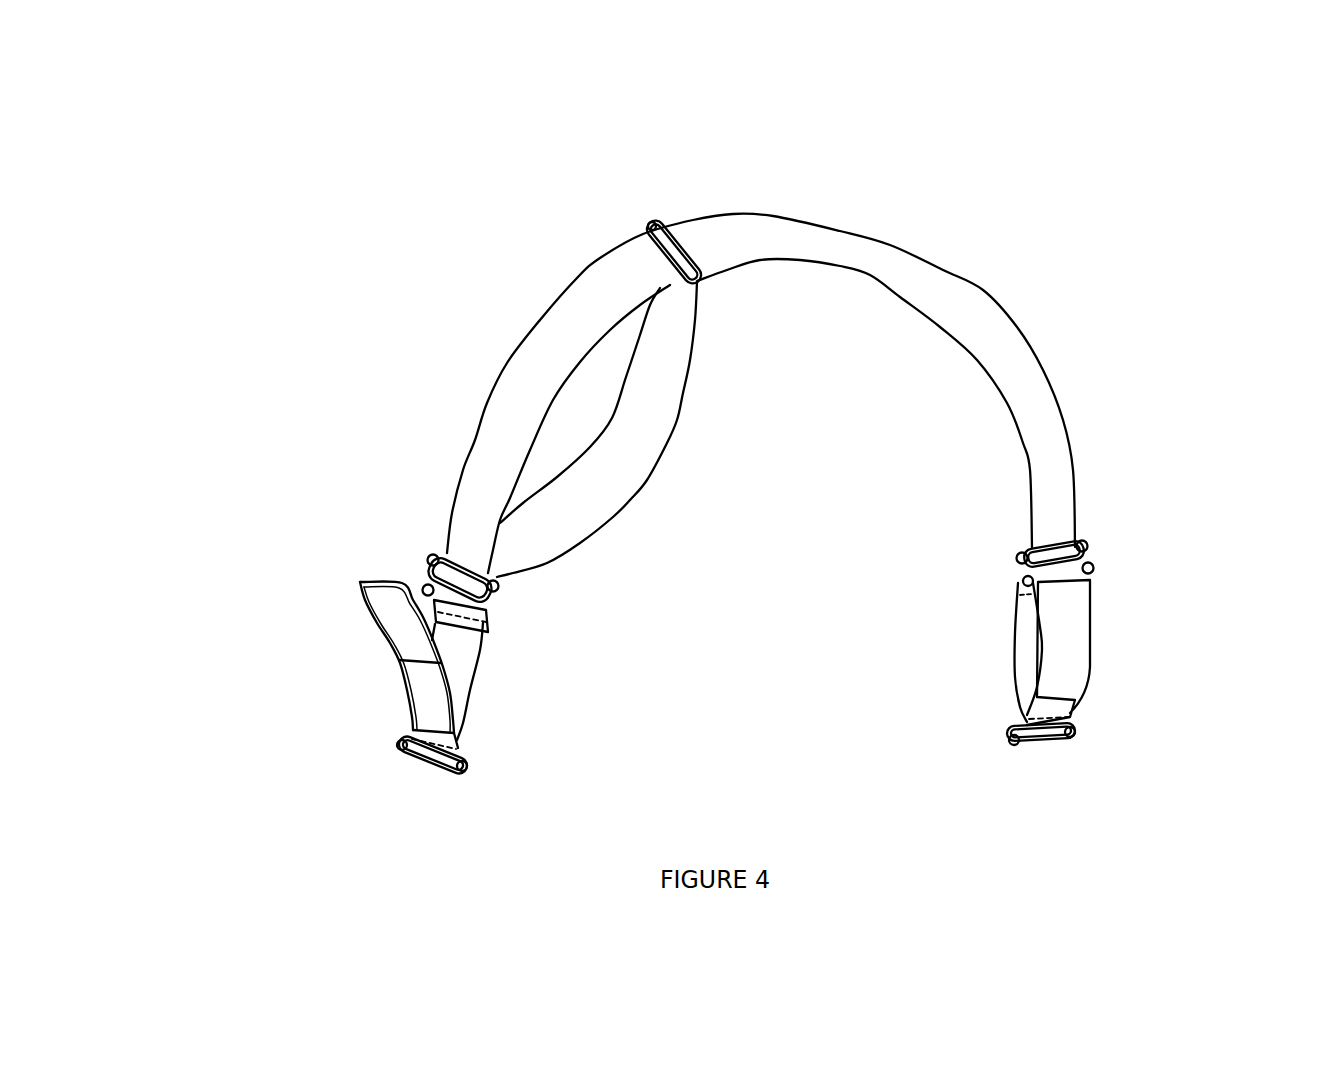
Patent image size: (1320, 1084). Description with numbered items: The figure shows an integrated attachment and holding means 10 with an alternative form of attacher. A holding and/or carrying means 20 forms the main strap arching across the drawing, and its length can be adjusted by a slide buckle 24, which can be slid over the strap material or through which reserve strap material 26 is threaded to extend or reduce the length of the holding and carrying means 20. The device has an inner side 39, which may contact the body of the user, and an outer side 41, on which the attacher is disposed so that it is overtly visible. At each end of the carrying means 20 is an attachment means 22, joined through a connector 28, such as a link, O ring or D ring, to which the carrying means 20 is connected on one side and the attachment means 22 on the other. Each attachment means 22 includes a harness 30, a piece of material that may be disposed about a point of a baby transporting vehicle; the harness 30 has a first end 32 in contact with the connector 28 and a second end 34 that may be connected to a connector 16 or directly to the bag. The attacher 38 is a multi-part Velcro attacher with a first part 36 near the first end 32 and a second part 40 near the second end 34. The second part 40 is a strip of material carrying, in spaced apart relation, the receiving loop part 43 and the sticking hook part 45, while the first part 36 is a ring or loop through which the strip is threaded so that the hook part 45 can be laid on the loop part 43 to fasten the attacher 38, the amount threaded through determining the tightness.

The integrated attachment and holding means 10 is at (1163, 240).
The connector 16 is at (453, 770).
The holding and/or carrying means 20 is at (837, 252).
The attachment means 22 is at (330, 659).
The slide buckle 24 is at (652, 232).
The reserve strap material 26 is at (667, 407).
The connector 28 is at (440, 553).
The harness 30 is at (467, 667).
The first end 32 is at (487, 620).
The second end 34 is at (463, 732).
The first part 36 is at (432, 590).
The attacher 38 is at (425, 587).
The inner side 39 is at (722, 284).
The second part 40 is at (383, 607).
The outer side 41 is at (810, 195).
The receiving loop part 43 is at (417, 692).
The sticking hook part 45 is at (395, 627).